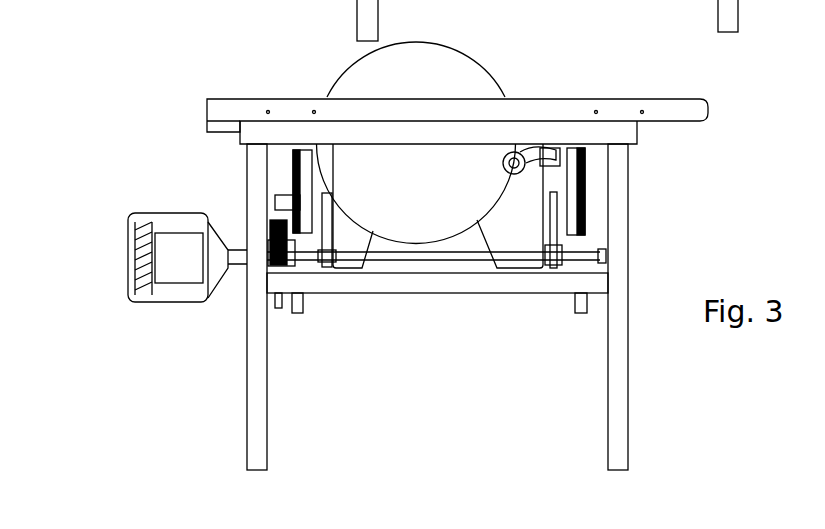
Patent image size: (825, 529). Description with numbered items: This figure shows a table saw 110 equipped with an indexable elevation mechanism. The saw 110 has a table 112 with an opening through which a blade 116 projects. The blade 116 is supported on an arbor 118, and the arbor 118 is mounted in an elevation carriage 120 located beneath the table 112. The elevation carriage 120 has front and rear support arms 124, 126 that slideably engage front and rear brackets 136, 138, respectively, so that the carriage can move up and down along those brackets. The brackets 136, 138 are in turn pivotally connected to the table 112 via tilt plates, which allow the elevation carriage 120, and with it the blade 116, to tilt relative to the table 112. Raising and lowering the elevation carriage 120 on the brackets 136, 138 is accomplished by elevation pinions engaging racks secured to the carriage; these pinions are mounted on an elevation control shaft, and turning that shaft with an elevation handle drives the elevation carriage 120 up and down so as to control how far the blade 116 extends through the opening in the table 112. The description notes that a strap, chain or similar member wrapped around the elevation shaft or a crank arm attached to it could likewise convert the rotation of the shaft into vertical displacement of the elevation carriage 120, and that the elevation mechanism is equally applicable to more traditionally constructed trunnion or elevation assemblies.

The saw 110 is at (551, 70).
The table 112 is at (676, 99).
The blade 116 is at (437, 44).
The arbor 118 is at (413, 143).
The elevation carriage 120 is at (483, 231).
The front support arm 124 is at (300, 232).
The rear support arm 126 is at (573, 242).
The front bracket 136 is at (297, 315).
The rear bracket 138 is at (580, 315).